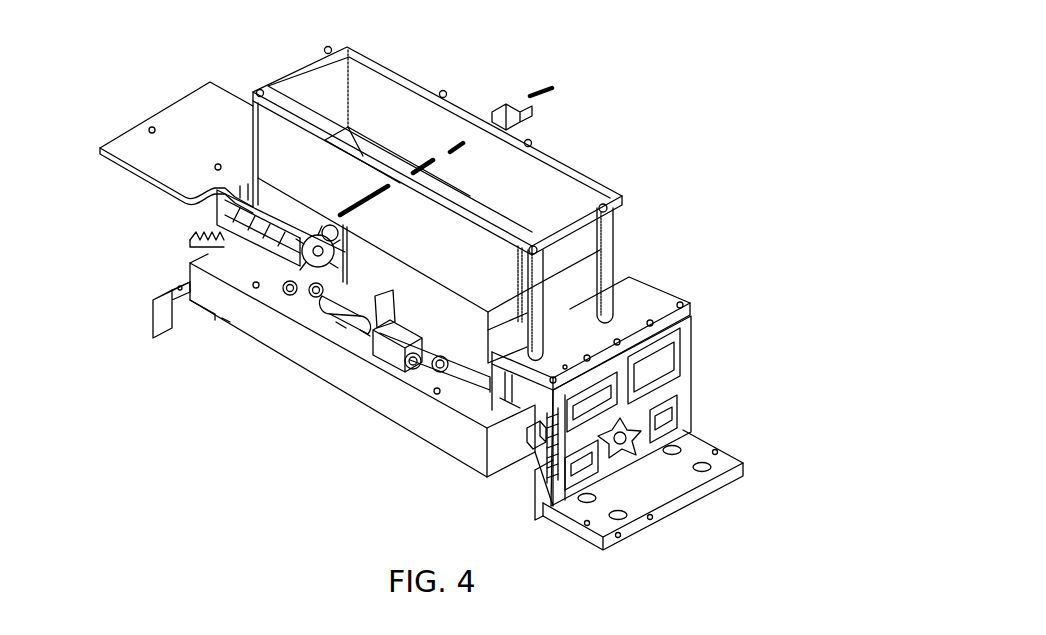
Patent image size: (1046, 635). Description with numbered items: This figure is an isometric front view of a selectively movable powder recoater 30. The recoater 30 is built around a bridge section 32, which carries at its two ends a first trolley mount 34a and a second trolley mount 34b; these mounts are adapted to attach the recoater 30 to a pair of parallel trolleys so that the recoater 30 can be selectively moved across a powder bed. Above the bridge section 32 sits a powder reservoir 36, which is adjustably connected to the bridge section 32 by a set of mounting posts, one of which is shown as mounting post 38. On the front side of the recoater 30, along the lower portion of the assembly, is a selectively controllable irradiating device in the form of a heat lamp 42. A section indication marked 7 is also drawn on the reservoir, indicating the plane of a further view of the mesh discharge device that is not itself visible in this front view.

The recoater 30 is at (660, 75).
The bridge section 32 is at (637, 288).
The first trolley mount 34a is at (182, 284).
The second trolley mount 34b is at (695, 448).
The powder reservoir 36 is at (413, 69).
The mounting post 38 is at (606, 256).
The heat lamp 42 is at (352, 382).
The section line 7- 7 is at (566, 107).